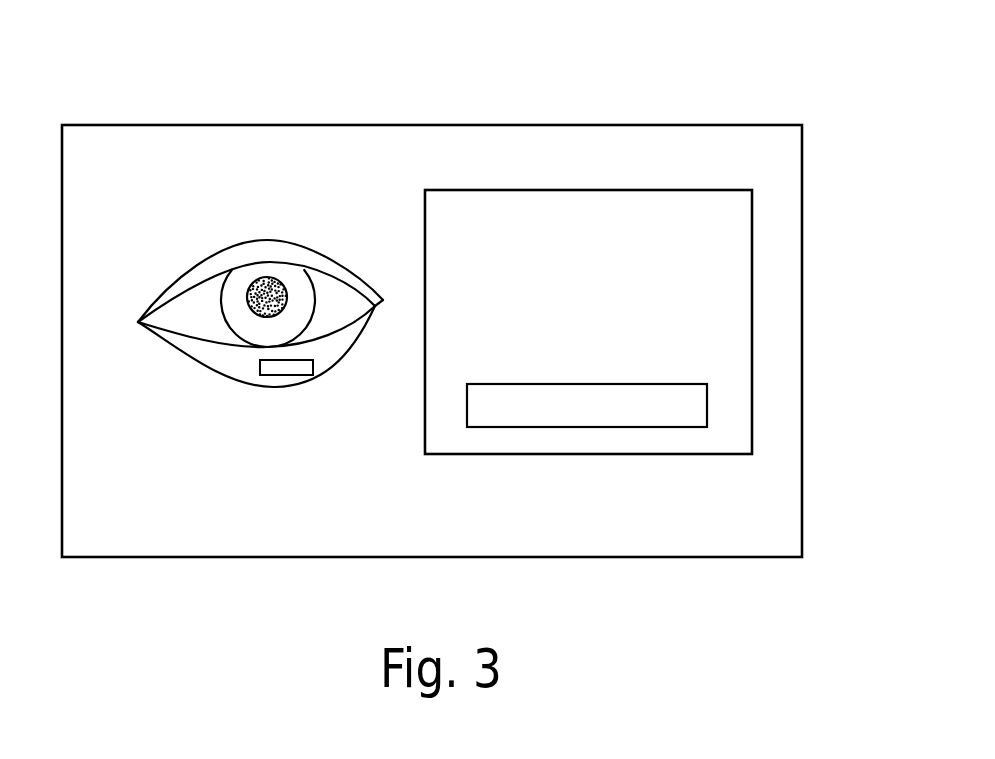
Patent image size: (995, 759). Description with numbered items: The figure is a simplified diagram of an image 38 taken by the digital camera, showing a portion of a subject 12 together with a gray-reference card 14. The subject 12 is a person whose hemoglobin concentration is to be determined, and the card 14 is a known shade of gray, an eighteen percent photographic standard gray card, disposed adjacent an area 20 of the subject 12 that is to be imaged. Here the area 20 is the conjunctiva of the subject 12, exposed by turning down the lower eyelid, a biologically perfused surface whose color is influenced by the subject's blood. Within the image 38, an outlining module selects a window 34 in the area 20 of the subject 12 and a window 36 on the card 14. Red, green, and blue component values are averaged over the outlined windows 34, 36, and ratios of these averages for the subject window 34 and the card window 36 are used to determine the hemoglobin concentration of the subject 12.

The subject 12 is at (245, 530).
The gray-reference card 14 is at (533, 454).
The area of the subject 20 is at (203, 375).
The window in the region of the subject 34 is at (296, 375).
The window of the card 36 is at (648, 384).
The image 38 is at (537, 84).